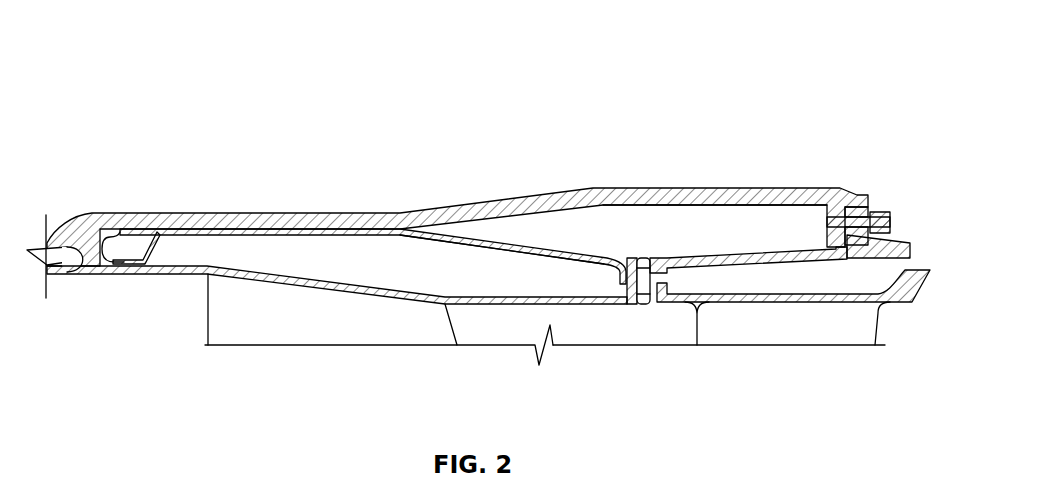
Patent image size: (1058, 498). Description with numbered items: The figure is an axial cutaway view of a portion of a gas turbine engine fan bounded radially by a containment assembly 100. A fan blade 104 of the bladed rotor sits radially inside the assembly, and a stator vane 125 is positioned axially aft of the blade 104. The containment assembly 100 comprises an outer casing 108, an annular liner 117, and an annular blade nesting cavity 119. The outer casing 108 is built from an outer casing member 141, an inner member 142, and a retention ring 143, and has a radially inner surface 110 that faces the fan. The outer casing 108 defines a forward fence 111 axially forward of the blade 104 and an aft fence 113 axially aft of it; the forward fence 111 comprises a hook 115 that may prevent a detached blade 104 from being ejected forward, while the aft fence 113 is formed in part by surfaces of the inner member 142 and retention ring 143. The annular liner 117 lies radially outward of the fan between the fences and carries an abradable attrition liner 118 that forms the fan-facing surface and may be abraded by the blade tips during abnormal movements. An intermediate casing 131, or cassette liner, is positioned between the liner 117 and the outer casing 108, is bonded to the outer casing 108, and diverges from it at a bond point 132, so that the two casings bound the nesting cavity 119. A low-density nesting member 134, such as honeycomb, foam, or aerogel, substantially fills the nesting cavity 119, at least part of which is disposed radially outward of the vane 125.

The containment assembly 100 is at (103, 52).
The blade 104 is at (370, 335).
The outer casing 108 is at (691, 178).
The radially inner surface 110 is at (725, 205).
The forward fence 111 is at (97, 267).
The aft fence 113 is at (612, 286).
The hook 115 is at (120, 232).
The annular liner 117 is at (190, 248).
The attrition liner 118 is at (163, 270).
The annular blade nesting cavity 119 is at (589, 214).
The stator vane 125 is at (767, 333).
The intermediate casing 131 is at (467, 238).
The bond point 132 is at (397, 232).
The nesting member 134 is at (790, 235).
The outer casing member 141 is at (802, 192).
The inner member 142 is at (737, 262).
The retention ring 143 is at (643, 303).